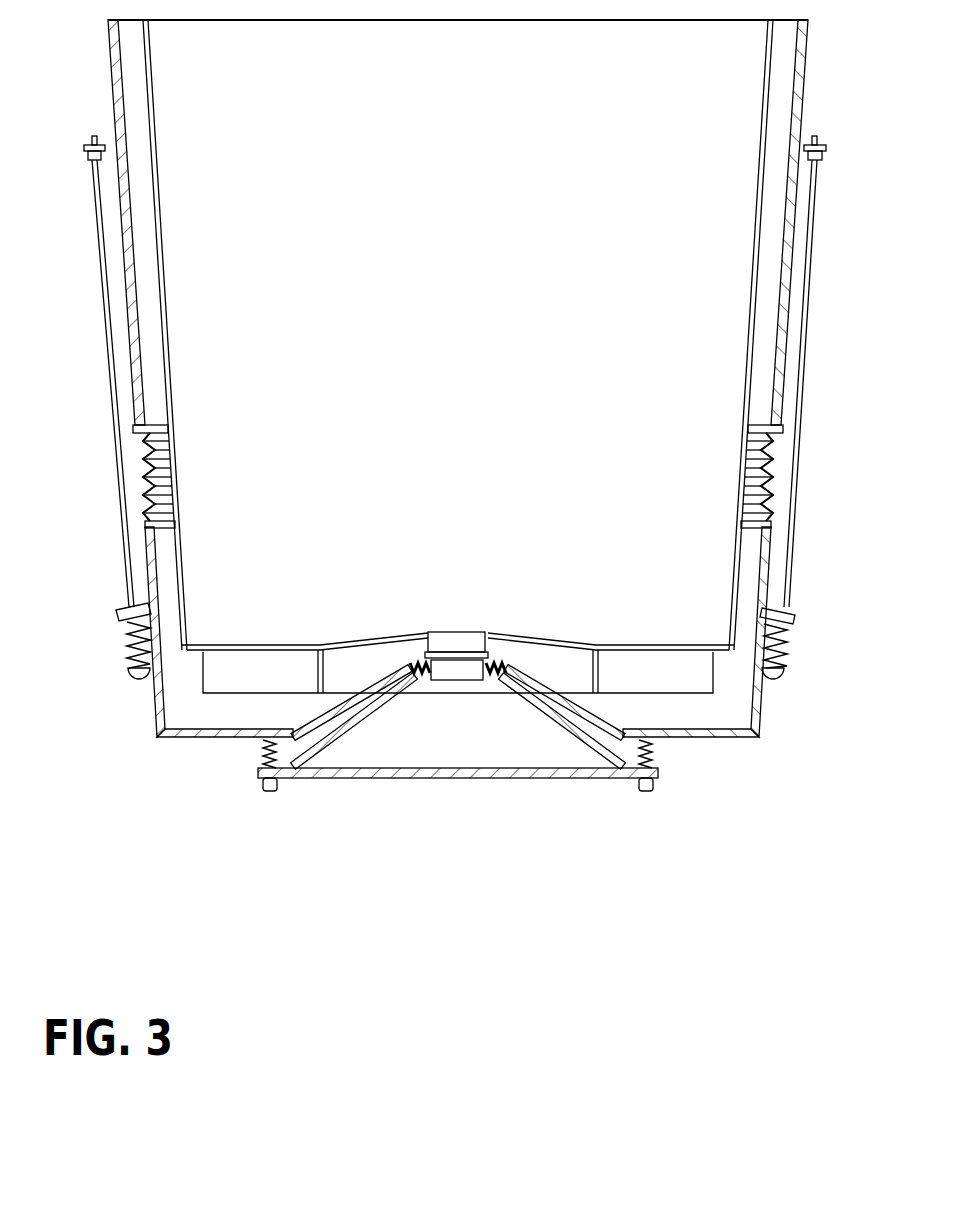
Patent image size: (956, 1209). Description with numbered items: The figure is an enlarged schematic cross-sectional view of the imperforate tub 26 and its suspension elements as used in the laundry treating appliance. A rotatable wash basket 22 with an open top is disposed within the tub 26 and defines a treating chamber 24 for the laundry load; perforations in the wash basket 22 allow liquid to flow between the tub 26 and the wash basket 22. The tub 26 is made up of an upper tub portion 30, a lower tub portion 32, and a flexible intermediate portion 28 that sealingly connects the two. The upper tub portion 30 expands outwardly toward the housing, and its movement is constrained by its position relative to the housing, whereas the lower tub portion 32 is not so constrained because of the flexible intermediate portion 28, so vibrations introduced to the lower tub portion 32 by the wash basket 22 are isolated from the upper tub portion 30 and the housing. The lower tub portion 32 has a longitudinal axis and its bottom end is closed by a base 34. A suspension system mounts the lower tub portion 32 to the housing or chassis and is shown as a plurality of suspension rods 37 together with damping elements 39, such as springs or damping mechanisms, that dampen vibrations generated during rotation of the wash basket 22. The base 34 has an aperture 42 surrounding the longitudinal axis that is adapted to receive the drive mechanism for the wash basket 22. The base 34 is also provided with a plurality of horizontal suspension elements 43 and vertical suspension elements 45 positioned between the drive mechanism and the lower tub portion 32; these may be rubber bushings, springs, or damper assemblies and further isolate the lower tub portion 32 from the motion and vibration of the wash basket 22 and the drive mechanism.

The wash basket 22 is at (183, 212).
The treating chamber 24 is at (478, 413).
The imperforate tub 26 is at (118, 283).
The flexible intermediate portion 28 is at (145, 478).
The upper tub portion 30 is at (118, 123).
The lower tub portion 32 is at (160, 710).
The base 34 is at (190, 738).
The suspension rods 37 is at (812, 227).
The damping elements 39 is at (787, 645).
The aperture 42 is at (503, 666).
The horizontal suspension elements 43 is at (487, 680).
The vertical suspension elements 45 is at (270, 745).